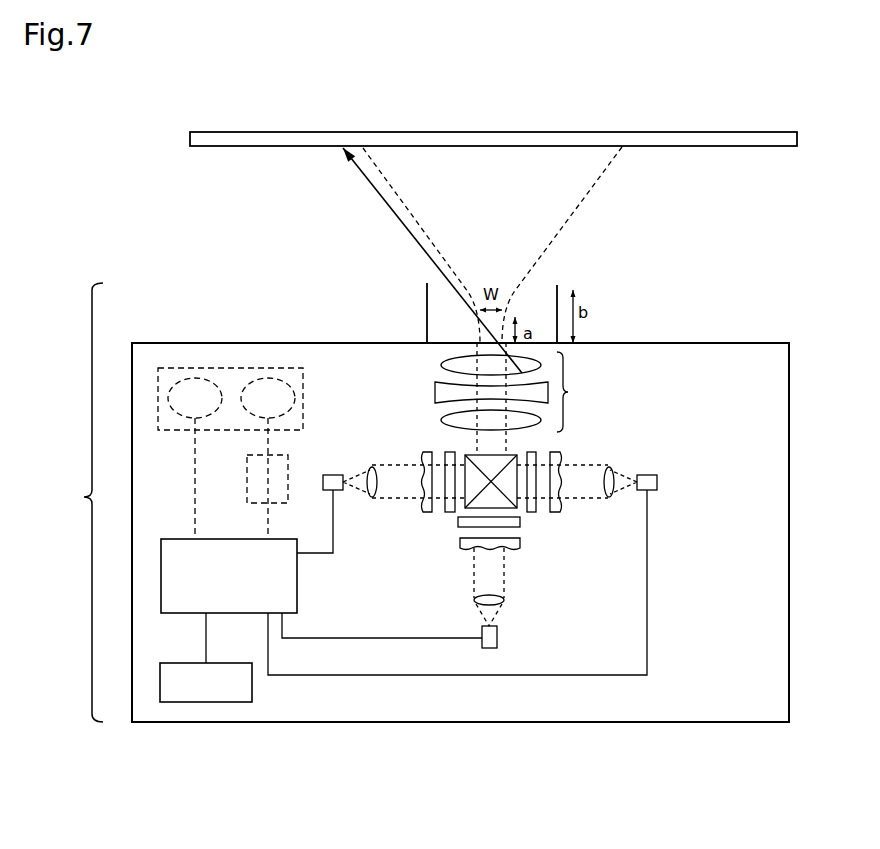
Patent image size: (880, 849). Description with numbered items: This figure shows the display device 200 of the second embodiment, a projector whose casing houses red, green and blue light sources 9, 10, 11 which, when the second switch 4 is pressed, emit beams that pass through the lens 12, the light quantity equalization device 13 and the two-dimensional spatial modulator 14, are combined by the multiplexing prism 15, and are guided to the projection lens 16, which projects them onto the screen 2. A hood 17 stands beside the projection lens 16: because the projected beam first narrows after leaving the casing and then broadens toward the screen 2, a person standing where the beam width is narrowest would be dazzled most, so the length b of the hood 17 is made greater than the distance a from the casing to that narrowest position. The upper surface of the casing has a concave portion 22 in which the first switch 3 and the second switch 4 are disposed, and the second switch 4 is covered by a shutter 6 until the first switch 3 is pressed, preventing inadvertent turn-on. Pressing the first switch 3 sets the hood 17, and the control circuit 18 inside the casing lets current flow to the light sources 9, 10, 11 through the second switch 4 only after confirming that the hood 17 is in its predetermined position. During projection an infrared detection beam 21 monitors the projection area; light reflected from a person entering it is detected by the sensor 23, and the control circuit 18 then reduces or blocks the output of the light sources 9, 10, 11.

The screen 2 is at (768, 138).
The first switch 3 is at (192, 388).
The second switch 4 is at (266, 388).
The shutter 6 is at (288, 470).
The red light source 9 is at (343, 476).
The green light source 10 is at (500, 631).
The blue light source 11 is at (648, 475).
The lens 12 is at (372, 497).
The light quantity equalization device 13 is at (428, 512).
The two-dimensional spatial modulator 14 is at (450, 512).
The multiplexing prism 15 is at (514, 458).
The projection lens 16 is at (514, 392).
The hood 17 is at (427, 305).
The control circuit 18 is at (297, 602).
The detection beam 21 is at (387, 203).
The concave portion 22 is at (290, 368).
The sensor 23 is at (252, 690).
The display device 200 is at (71, 502).